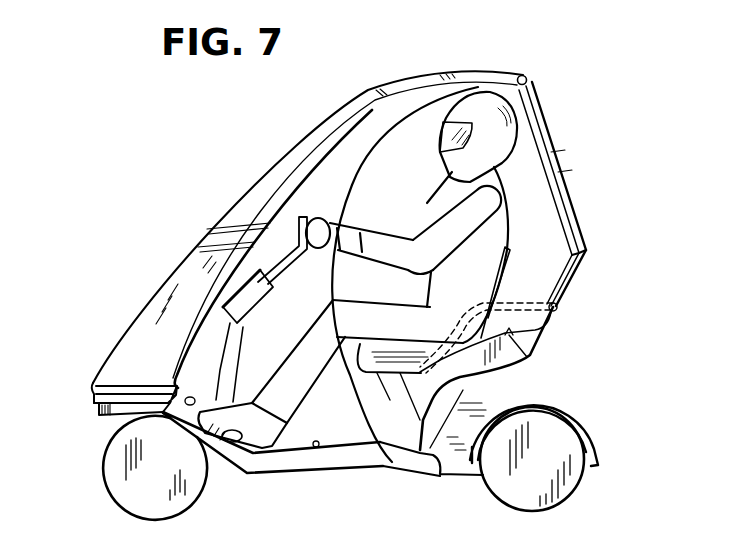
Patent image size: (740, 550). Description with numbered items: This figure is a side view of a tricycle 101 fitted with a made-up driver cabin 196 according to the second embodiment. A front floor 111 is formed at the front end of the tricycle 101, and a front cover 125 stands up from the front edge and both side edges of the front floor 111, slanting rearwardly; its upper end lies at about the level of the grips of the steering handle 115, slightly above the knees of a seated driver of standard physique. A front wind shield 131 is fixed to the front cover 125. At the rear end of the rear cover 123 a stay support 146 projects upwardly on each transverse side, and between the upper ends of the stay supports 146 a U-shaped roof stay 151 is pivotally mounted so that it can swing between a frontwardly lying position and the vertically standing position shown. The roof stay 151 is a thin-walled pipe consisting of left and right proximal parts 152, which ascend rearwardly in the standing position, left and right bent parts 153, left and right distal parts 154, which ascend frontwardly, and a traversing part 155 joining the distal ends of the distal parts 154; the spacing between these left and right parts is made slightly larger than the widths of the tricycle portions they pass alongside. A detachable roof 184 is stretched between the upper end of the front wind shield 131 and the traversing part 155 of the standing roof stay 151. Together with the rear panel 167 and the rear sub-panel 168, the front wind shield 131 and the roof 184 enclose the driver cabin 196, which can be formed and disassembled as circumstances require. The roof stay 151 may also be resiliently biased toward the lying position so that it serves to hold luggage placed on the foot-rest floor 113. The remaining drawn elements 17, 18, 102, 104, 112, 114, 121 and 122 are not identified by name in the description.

The seat back 17 is at (506, 277).
The seat 18 is at (375, 365).
The tricycle 101 is at (129, 341).
The frame footboard 102 is at (263, 472).
The front wheel 104 is at (103, 459).
The front floor 111 is at (106, 383).
The front wheel hub and fork 112 is at (188, 405).
The foot-rest floor 113 is at (316, 448).
The front bumper 114 is at (98, 409).
The steering handle 115 is at (290, 266).
The rear body lower portion 121 is at (386, 462).
The pin 122 is at (527, 358).
The rear cover 123 is at (482, 364).
The front cover 125 is at (163, 286).
The front wind shield 131 is at (298, 142).
The stay support 146 is at (556, 319).
The roof stay 151 is at (575, 182).
The proximal part 152 is at (574, 291).
The bent part 153 is at (592, 250).
The distal part 154 is at (562, 150).
The traversing part 155 is at (524, 75).
The rear panel 167 is at (549, 126).
The rear sub-panel 168 is at (590, 267).
The roof 184 is at (449, 72).
The driver cabin 196 is at (372, 116).